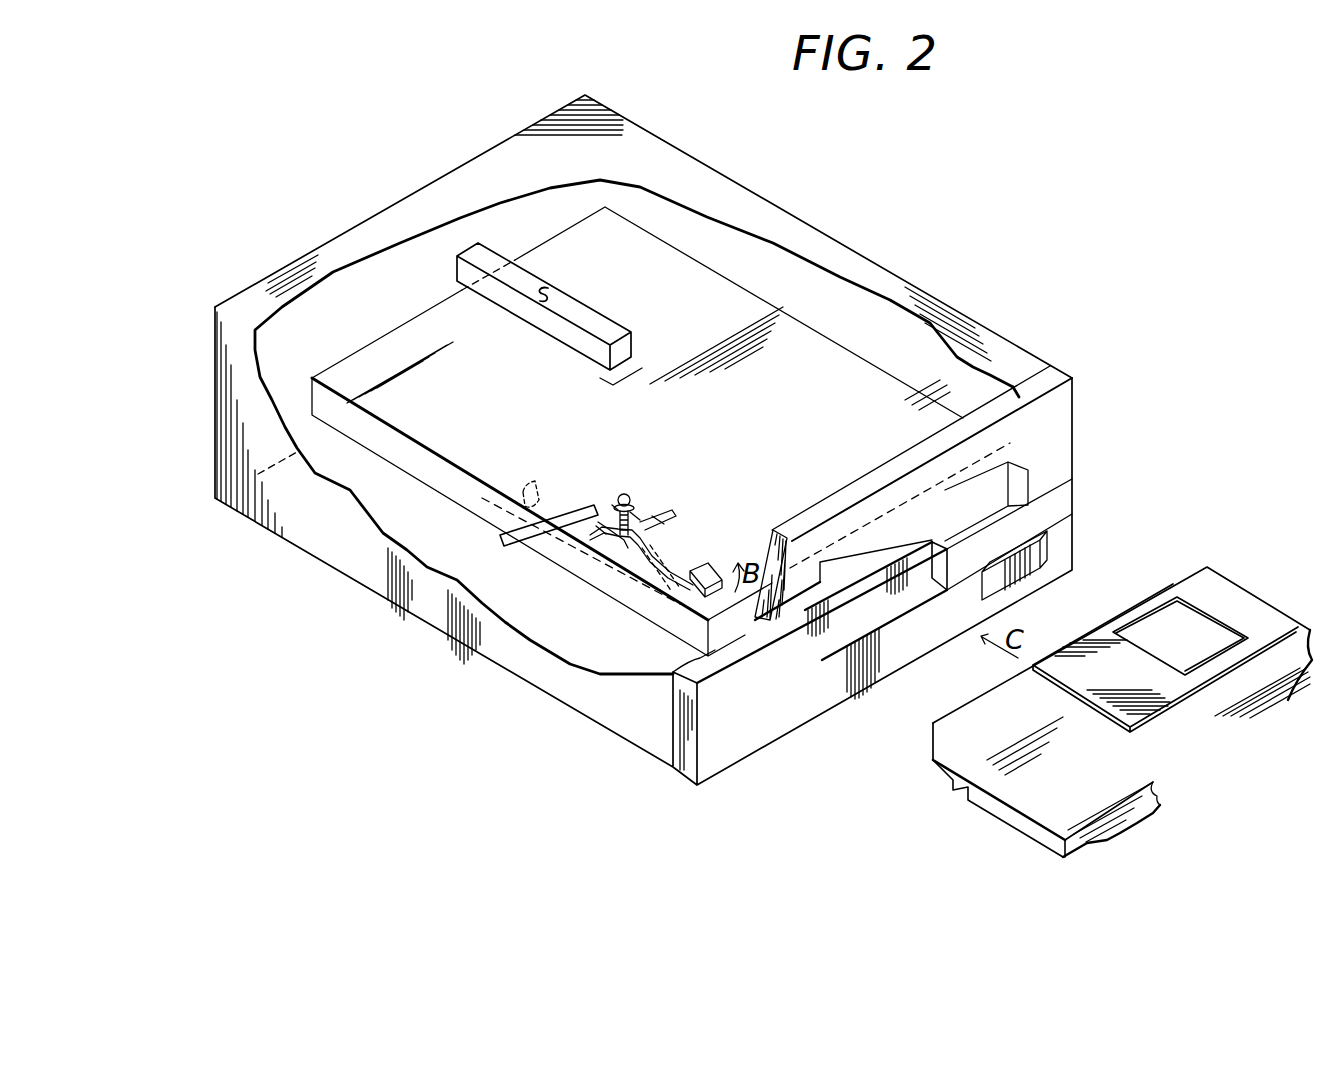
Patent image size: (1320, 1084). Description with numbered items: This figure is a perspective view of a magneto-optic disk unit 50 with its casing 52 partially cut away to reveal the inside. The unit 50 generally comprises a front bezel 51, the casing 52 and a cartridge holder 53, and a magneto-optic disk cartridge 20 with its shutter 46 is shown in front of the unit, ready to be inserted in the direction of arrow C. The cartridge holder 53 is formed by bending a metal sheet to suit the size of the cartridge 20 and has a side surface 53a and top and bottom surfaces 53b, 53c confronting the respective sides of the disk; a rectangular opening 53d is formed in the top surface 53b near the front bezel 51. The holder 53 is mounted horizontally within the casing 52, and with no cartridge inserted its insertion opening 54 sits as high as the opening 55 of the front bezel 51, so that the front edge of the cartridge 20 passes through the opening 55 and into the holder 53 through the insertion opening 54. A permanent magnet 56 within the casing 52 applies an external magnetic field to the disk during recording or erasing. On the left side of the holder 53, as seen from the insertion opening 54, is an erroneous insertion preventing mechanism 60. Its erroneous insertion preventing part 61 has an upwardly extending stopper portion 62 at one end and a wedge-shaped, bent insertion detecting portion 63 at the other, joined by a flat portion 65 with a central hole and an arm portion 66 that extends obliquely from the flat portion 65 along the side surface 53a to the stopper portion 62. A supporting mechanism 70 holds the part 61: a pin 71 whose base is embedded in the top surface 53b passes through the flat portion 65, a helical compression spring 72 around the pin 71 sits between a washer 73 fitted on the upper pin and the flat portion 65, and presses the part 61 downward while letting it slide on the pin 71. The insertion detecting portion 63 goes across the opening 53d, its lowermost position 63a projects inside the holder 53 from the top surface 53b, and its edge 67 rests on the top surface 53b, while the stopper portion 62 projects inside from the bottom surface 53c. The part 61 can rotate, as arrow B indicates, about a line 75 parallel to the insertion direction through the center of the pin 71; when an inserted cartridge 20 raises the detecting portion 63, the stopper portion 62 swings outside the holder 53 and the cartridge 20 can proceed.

The magneto-optic disk cartridge 20 is at (1007, 849).
The shutter 46 is at (1105, 627).
The magneto-optic disk unit 50 is at (968, 109).
The front bezel 51 is at (1062, 460).
The casing 52 is at (876, 269).
The cartridge holder 53 is at (843, 350).
The side surface 53a is at (422, 472).
The top surface 53b is at (400, 348).
The bottom surface 53c is at (718, 665).
The rectangular opening 53d is at (710, 567).
The insertion opening 54 is at (740, 628).
The opening 55 is at (778, 640).
The permanent magnet 56 is at (597, 306).
The erroneous insertion preventing mechanism 60 is at (665, 504).
The erroneous insertion preventing part 61 is at (652, 533).
The stopper portion 62 is at (533, 490).
The insertion detecting portion 63 is at (692, 570).
The lowermost position 63a is at (677, 588).
The flat portion 65 is at (603, 538).
The arm portion 66 is at (550, 538).
The edge 67 is at (690, 600).
The supporting mechanism 70 is at (630, 482).
The pin 71 is at (634, 507).
The helical compression spring 72 is at (598, 525).
The washer 73 is at (616, 505).
The line 75 is at (662, 518).